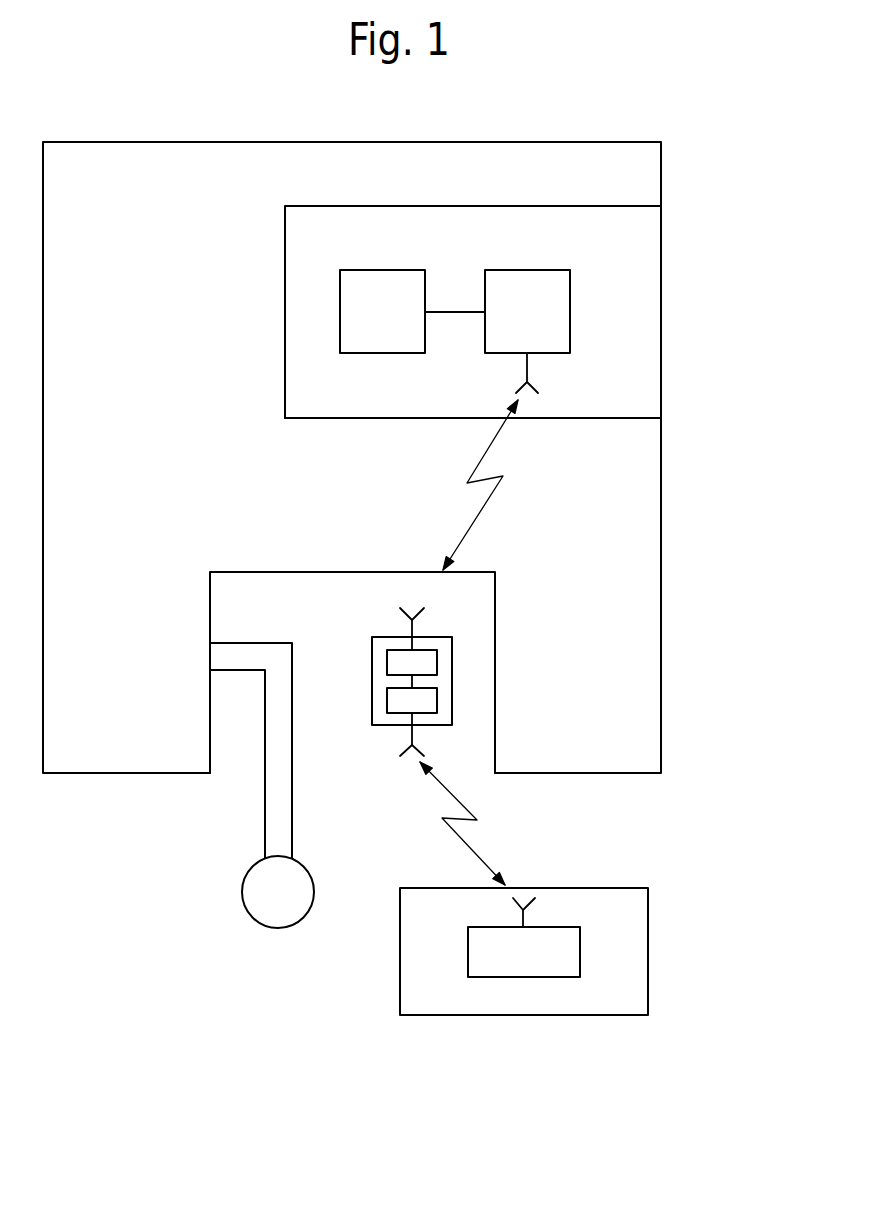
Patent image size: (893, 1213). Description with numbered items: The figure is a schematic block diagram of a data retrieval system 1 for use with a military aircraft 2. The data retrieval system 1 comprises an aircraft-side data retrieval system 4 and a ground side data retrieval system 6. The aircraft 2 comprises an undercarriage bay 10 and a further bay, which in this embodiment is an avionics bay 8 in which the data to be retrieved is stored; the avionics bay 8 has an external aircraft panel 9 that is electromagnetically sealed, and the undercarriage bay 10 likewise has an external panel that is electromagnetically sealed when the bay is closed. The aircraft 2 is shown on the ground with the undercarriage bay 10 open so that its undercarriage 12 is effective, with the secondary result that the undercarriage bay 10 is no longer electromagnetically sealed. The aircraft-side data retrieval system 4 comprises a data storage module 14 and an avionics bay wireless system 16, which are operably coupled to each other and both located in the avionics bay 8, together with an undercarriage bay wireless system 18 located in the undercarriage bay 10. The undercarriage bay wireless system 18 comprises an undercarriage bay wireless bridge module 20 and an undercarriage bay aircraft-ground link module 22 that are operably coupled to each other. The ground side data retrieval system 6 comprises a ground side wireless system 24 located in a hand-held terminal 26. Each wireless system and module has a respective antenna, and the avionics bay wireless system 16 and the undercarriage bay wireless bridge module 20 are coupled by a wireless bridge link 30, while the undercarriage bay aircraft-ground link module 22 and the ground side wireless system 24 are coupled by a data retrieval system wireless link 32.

The data retrieval system 1 is at (665, 105).
The aircraft 2 is at (107, 142).
The aircraft-side data retrieval system 4 is at (690, 466).
The ground side data retrieval system 6 is at (664, 943).
The avionics bay 8 is at (320, 220).
The external aircraft panel 9 is at (662, 302).
The undercarriage bay 10 is at (243, 594).
The undercarriage 12 is at (265, 820).
The data storage module 14 is at (382, 311).
The avionics bay wireless system 16 is at (497, 311).
The undercarriage bay wireless system 18 is at (375, 725).
The undercarriage bay wireless bridge module 20 is at (387, 661).
The undercarriage bay aircraft-ground link module 22 is at (387, 701).
The ground side wireless system 24 is at (524, 952).
The hand-held terminal 26 is at (400, 992).
The wireless bridge link 30 is at (487, 505).
The data retrieval system wireless link 32 is at (483, 856).